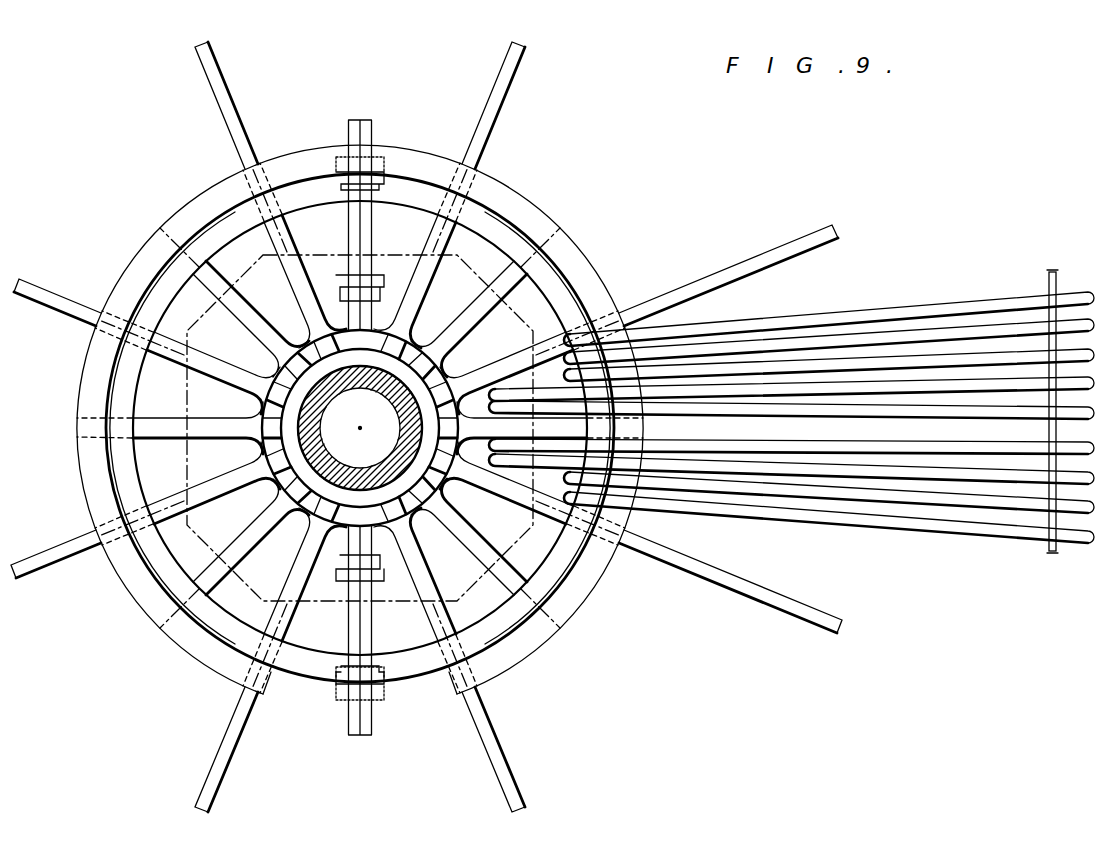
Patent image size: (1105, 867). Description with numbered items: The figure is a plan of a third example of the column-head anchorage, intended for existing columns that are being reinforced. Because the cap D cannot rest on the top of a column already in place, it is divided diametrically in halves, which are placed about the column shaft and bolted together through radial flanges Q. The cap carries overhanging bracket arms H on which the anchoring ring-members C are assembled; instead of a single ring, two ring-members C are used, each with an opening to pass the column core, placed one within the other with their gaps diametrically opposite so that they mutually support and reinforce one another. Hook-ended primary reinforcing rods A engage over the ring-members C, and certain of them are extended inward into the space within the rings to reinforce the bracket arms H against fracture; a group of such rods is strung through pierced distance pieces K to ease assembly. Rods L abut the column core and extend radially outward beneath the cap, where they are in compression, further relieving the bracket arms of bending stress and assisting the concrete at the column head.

The anchoring ring-member C is at (300, 152).
The bracket H is at (565, 268).
The cap D is at (424, 346).
The radial flange Q is at (374, 128).
The rod L is at (228, 92).
The primary reinforcing rod A is at (833, 313).
The distance piece K is at (1048, 276).